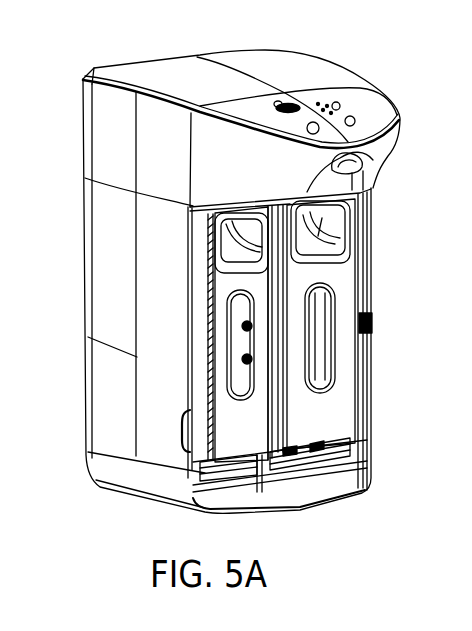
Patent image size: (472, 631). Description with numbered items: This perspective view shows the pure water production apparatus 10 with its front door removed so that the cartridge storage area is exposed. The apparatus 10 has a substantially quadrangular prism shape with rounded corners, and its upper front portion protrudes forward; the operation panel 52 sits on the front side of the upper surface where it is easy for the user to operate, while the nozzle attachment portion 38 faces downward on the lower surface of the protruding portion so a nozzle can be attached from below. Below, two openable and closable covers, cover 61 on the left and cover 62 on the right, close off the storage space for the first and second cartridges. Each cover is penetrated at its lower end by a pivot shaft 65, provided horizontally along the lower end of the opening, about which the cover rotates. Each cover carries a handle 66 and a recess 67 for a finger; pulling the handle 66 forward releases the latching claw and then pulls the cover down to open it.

The pure water production apparatus 10 is at (356, 52).
The operation panel 52 is at (353, 103).
The nozzle attachment portion 38 is at (343, 160).
The cover 61 is at (253, 412).
The cover 62 is at (343, 295).
The handle 66 is at (238, 227).
The recess 67 is at (332, 232).
The pivot shaft 65 is at (236, 468).